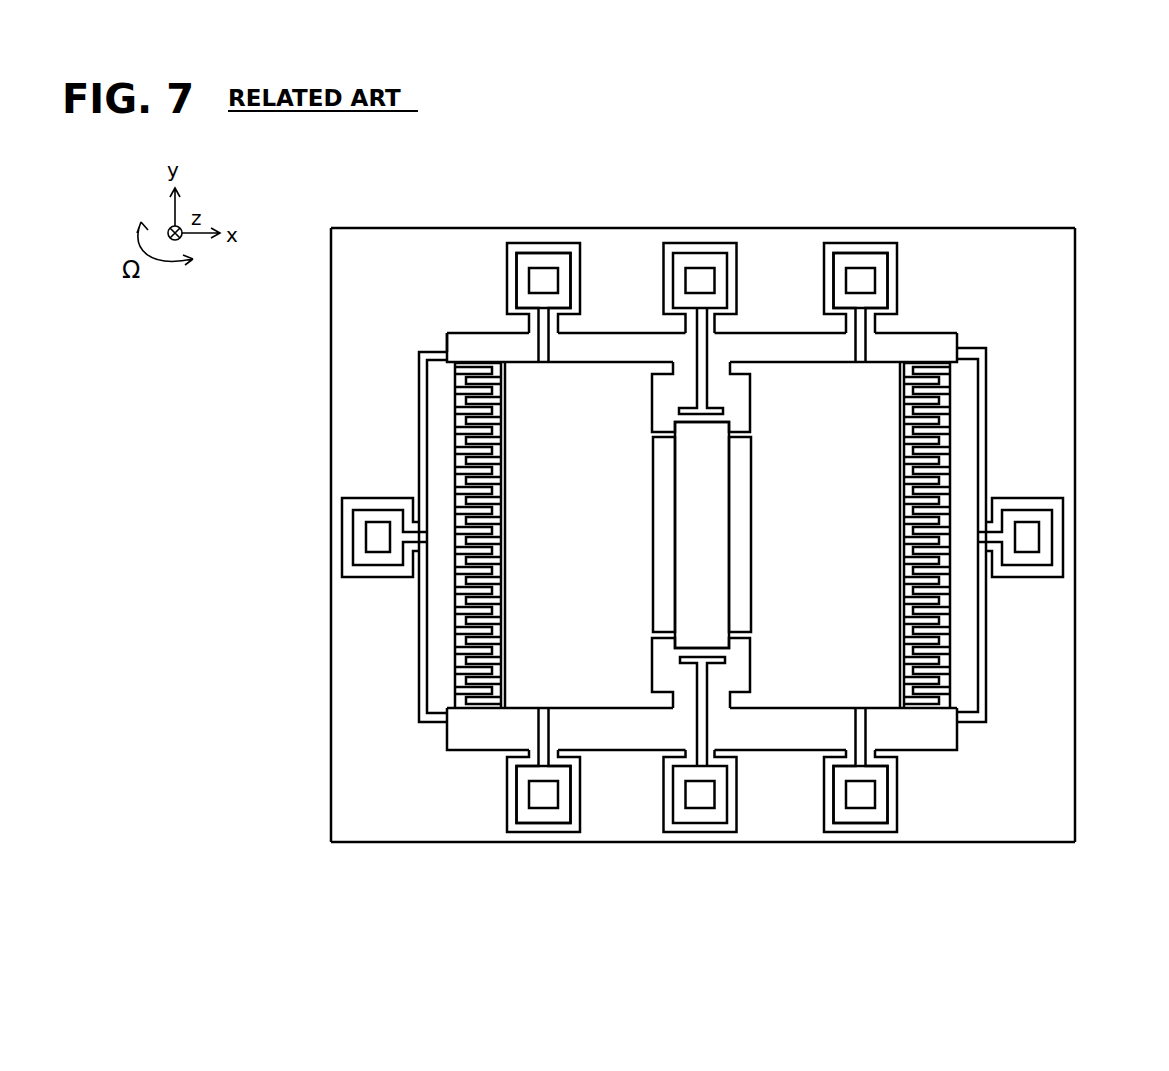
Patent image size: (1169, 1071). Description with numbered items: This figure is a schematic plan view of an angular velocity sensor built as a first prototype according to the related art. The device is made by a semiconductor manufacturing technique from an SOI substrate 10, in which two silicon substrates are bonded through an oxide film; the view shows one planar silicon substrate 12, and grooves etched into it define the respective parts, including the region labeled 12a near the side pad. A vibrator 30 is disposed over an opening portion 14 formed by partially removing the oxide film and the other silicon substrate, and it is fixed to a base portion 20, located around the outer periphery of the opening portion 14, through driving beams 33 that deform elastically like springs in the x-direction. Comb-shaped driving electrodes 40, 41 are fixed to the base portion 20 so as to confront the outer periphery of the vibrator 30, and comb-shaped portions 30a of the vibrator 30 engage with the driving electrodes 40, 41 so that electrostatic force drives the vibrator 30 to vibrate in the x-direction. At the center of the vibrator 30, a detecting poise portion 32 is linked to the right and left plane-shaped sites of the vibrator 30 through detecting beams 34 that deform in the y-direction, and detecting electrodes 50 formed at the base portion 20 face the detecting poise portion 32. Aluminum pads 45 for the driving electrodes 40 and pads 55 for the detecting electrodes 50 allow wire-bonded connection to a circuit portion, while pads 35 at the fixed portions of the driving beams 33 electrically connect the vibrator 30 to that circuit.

The SOI substrate 10 is at (1090, 452).
The silicon substrate 12 is at (1040, 425).
The substrate pad region 12a is at (365, 502).
The opening portion 14 is at (493, 360).
The base portion 20 is at (330, 389).
The vibrator 30 is at (794, 370).
The comb-shaped portions 30a is at (477, 358).
The detecting poise portion 32 is at (690, 604).
The driving beams 33 is at (537, 347).
The detecting beams 34 is at (735, 436).
The pads for the vibrator 35 is at (547, 272).
The driving electrode 40 is at (434, 642).
The driving electrode 41 is at (973, 436).
The pads for the driving electrodes 45 is at (373, 535).
The detecting electrodes 50 is at (695, 407).
The pads for the detecting electrodes 55 is at (703, 277).